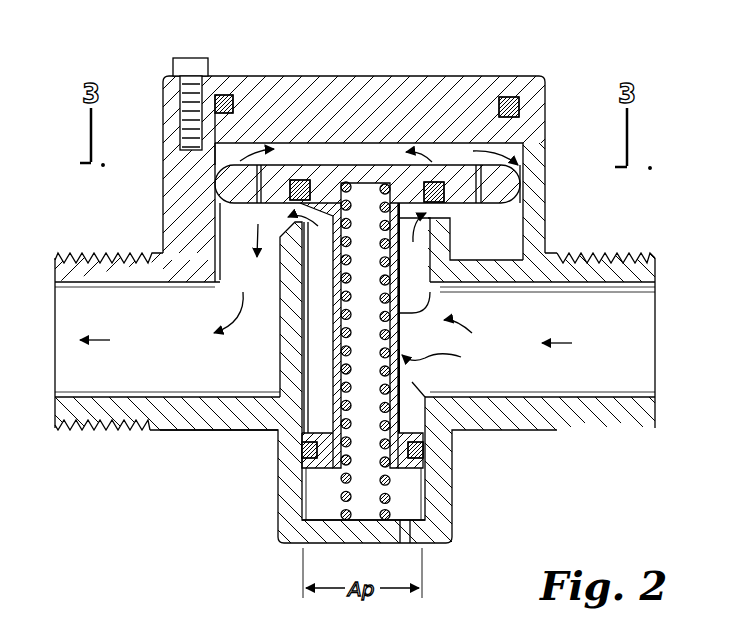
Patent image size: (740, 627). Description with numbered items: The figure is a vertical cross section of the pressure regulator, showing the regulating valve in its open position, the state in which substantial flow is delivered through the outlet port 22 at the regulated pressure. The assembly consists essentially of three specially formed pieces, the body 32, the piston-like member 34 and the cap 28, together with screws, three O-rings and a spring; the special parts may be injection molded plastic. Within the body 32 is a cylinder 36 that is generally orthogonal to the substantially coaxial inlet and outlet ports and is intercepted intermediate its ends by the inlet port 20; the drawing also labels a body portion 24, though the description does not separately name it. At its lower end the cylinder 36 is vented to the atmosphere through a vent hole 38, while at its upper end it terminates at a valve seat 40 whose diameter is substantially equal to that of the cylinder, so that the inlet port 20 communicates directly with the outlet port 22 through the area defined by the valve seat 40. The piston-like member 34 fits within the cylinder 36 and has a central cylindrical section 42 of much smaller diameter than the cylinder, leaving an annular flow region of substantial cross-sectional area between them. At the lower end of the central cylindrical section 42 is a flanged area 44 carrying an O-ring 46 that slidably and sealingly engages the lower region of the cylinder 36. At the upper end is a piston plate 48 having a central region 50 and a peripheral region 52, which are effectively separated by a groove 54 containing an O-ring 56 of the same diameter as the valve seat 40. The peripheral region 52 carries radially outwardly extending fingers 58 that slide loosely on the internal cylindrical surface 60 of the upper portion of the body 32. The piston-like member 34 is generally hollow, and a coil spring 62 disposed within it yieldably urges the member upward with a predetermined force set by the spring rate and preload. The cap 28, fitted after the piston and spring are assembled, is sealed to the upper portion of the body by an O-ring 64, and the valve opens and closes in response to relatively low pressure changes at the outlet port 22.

The inlet port 20 is at (634, 255).
The outlet port 22 is at (66, 254).
The valve body 24 is at (462, 497).
The cap 28 is at (375, 76).
The body 32 is at (250, 446).
The piston-like member 34 is at (395, 335).
The cylinder 36 is at (310, 352).
The vent hole 38 is at (432, 543).
The valve seat 40 is at (430, 219).
The central cylindrical section 42 is at (418, 311).
The flanged area 44 is at (342, 503).
The O-ring 46 is at (304, 452).
The piston plate 48 is at (343, 143).
The central region 50 is at (388, 166).
The peripheral region 52 is at (273, 163).
The groove 54 is at (302, 180).
The O-ring 56 is at (300, 213).
The fingers 58 is at (236, 95).
The internal cylindrical surface 60 is at (218, 153).
The coil spring 62 is at (303, 518).
The O-ring 64 is at (511, 97).